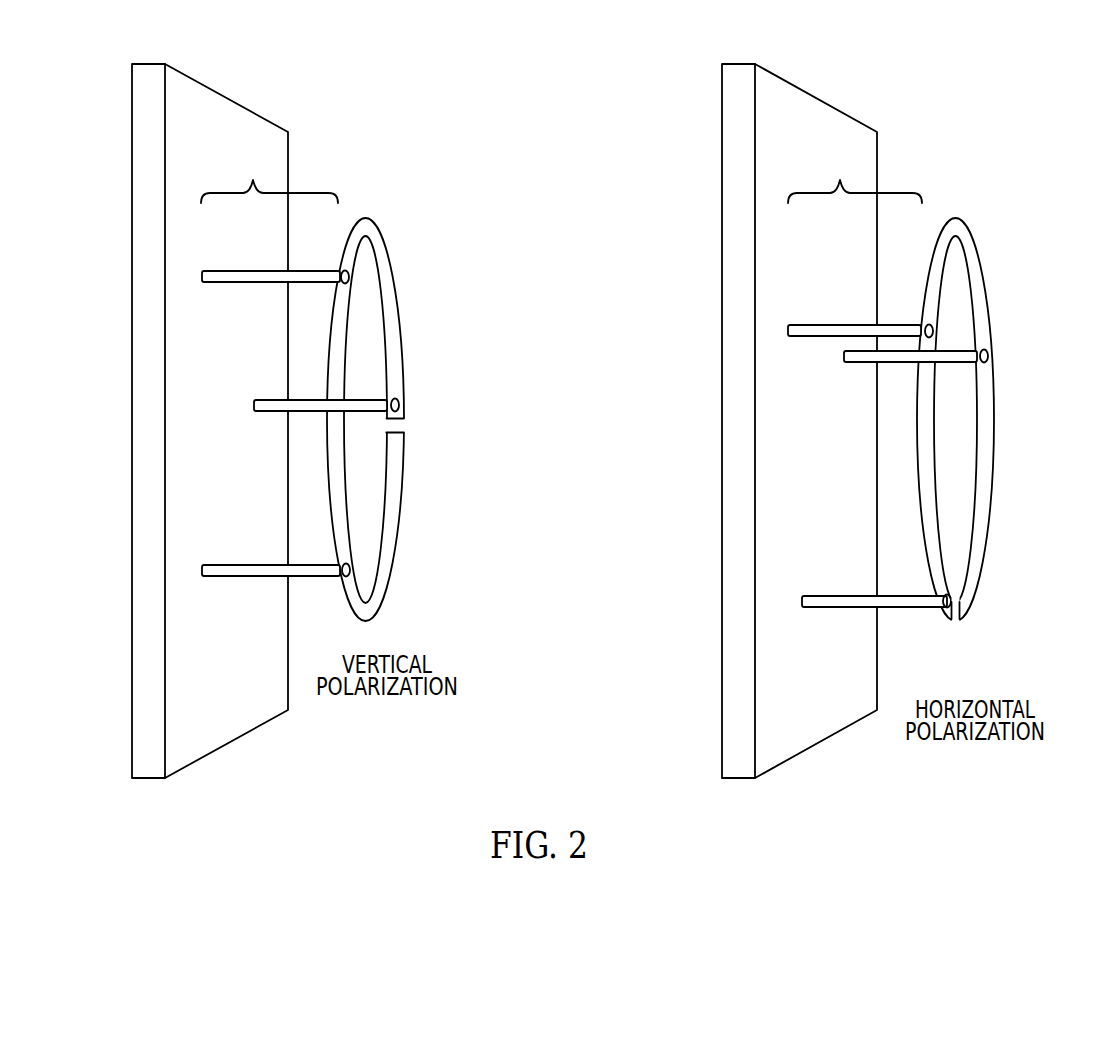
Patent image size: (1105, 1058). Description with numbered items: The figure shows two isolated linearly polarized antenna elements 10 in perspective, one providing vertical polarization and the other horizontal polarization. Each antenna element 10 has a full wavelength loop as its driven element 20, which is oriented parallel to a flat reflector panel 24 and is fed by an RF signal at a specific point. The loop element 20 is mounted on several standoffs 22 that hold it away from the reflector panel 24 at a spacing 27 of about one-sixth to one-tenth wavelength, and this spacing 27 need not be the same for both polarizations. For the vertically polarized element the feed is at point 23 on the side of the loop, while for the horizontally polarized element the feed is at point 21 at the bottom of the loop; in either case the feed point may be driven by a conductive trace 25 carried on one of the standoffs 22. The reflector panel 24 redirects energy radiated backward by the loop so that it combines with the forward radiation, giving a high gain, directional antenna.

The antenna element 10 is at (459, 835).
The driven element 20 is at (397, 557).
The feed point of the horizontal polarization 21 is at (956, 634).
The standoffs 22 is at (222, 283).
The feed point of the vertical polarization 23 is at (423, 426).
The reflector panel 24 is at (236, 718).
The conductive trace 25 is at (357, 412).
The spacing 27 is at (561, 176).